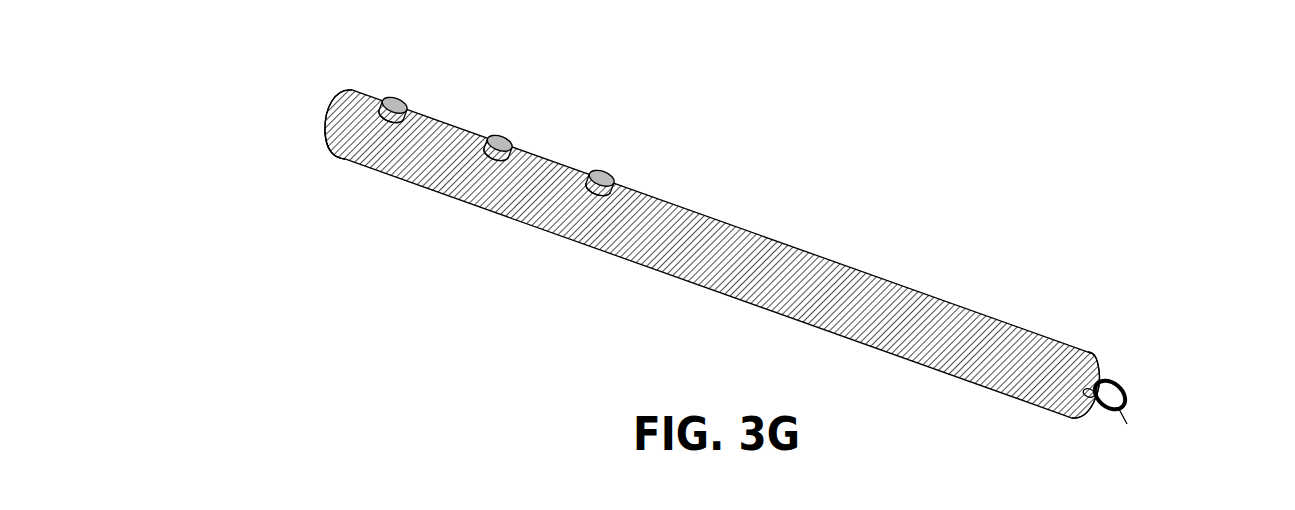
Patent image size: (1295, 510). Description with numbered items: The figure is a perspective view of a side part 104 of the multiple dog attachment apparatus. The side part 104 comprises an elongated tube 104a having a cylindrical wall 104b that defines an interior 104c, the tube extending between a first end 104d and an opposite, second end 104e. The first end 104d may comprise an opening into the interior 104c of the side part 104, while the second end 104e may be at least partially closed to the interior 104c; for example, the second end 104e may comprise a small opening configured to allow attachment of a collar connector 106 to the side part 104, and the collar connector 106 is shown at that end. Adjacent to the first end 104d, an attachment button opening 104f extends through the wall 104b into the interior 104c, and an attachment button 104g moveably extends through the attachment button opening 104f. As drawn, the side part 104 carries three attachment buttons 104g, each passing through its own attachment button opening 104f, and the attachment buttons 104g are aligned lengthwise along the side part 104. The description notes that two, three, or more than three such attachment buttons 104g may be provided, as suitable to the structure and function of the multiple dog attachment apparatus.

The side part 104 is at (710, 223).
The elongated tube 104a is at (792, 202).
The cylindrical wall 104b is at (800, 275).
The interior 104c is at (306, 110).
The first end 104d is at (307, 167).
The second end 104e is at (1115, 334).
The attachment button opening 104f is at (568, 209).
The attachment button 104g is at (419, 90).
The collar connector 106 is at (1174, 365).